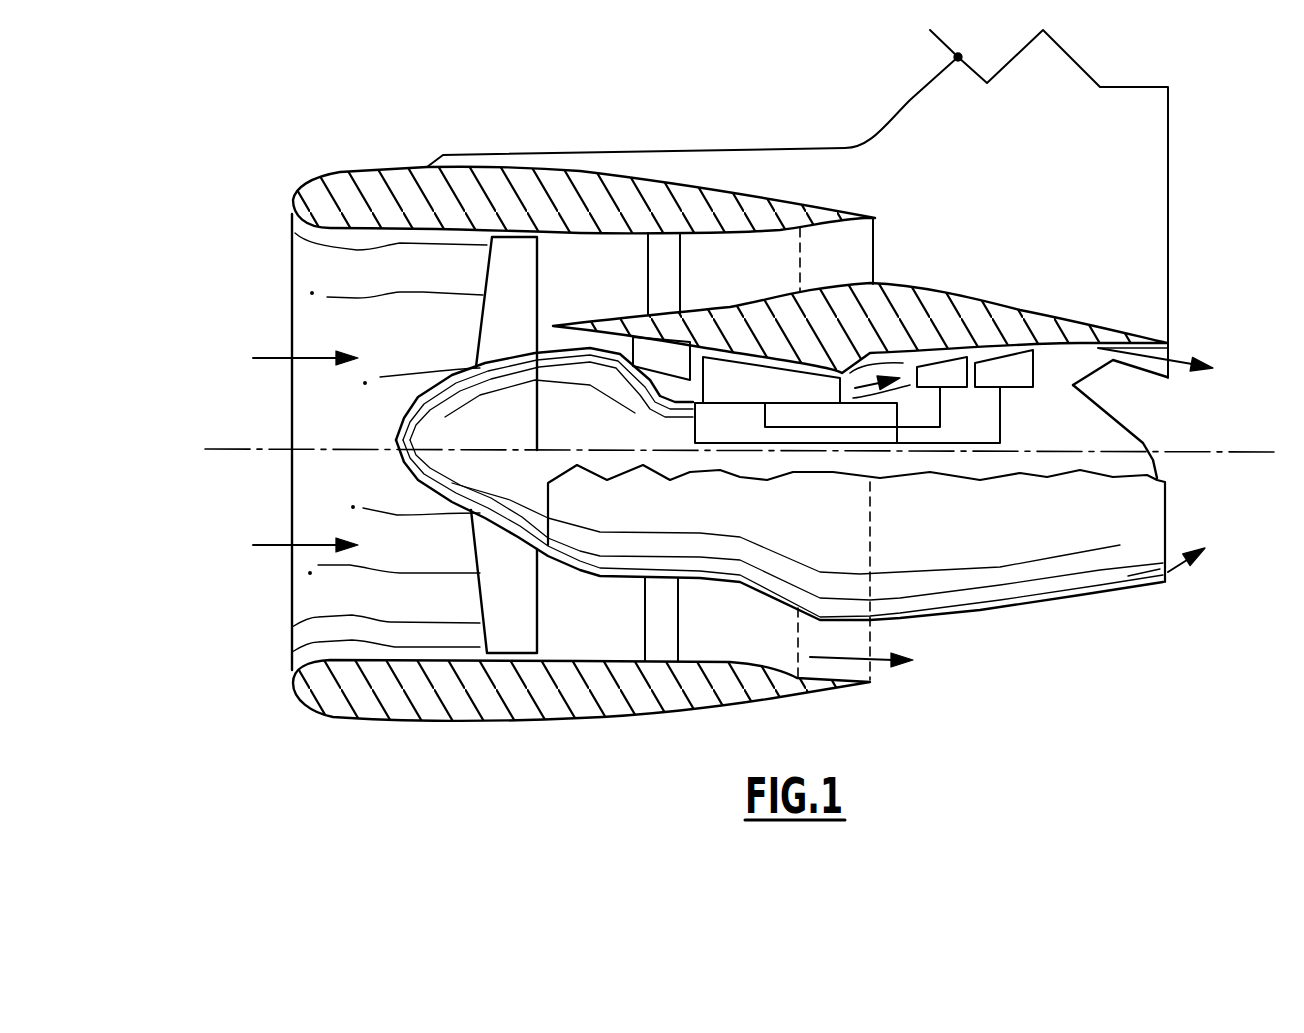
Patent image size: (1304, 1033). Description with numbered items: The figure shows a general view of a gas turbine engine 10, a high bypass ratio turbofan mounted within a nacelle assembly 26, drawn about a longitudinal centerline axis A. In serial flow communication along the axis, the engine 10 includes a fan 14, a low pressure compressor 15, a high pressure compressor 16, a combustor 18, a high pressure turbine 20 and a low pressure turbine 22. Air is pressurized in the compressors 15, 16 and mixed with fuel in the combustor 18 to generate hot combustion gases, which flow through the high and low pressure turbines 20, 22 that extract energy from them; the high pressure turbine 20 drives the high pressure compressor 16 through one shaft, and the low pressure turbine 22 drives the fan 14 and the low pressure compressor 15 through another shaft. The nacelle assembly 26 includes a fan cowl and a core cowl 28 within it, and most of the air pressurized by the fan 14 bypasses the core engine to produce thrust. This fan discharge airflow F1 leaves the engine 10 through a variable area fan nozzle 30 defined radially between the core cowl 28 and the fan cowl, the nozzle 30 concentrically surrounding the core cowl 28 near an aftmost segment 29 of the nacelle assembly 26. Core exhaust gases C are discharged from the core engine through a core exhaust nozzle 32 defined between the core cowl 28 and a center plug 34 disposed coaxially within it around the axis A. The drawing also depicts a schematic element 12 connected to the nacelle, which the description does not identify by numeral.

The gas turbine engine 10 is at (317, 122).
The controller 12 is at (1047, 88).
The fan 14 is at (485, 607).
The low pressure compressor 15 is at (658, 388).
The high pressure compressor 16 is at (747, 388).
The combustor 18 is at (893, 395).
The high pressure turbine 20 is at (952, 390).
The low pressure turbine 22 is at (1020, 390).
The nacelle assembly 26 is at (560, 197).
The core cowl 28 is at (1020, 310).
The aftmost segment 29 is at (913, 187).
The variable area fan nozzle 30 is at (842, 215).
The core exhaust nozzle 32 is at (1167, 343).
The center plug 34 is at (1107, 425).
The fan discharge airflow F1 is at (693, 266).
The longitudinal centerline axis A is at (1243, 462).
The core exhaust gases C is at (1166, 568).